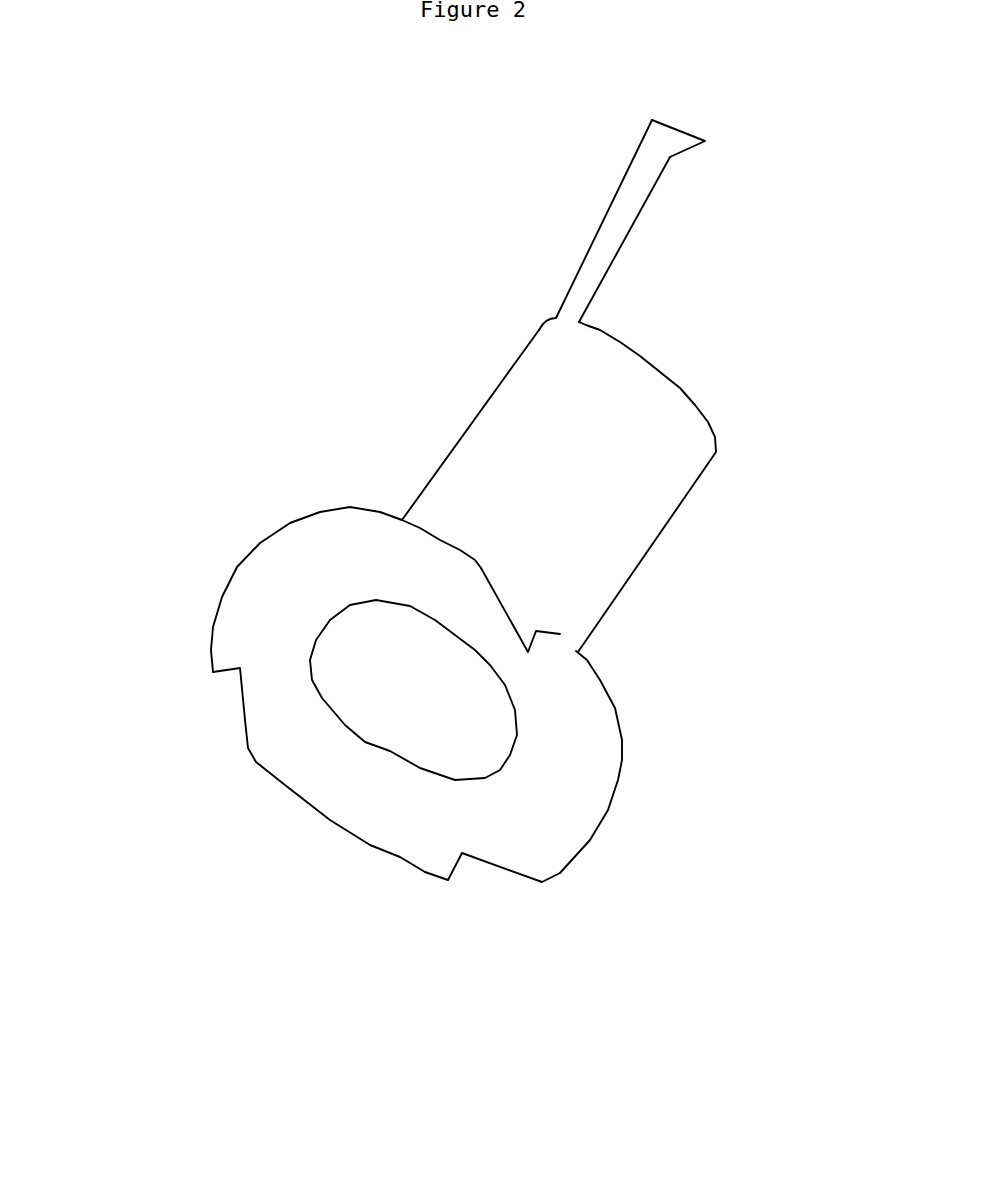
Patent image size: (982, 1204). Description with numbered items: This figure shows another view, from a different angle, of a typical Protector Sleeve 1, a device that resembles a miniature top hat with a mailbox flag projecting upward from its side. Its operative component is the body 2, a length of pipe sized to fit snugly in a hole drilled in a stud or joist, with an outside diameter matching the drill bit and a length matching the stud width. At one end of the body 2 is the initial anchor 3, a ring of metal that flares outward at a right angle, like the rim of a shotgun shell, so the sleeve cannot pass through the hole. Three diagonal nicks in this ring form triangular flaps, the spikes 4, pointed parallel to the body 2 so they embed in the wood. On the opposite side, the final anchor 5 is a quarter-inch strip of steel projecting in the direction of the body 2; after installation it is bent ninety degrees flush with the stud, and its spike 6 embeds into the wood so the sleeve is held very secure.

The Protector Sleeve 1 is at (276, 339).
The body 2 is at (575, 507).
The initial anchor 3 is at (350, 787).
The spikes (triangular flaps) 4 is at (214, 672).
The final anchor 5 is at (593, 280).
The spikes 6 is at (675, 140).